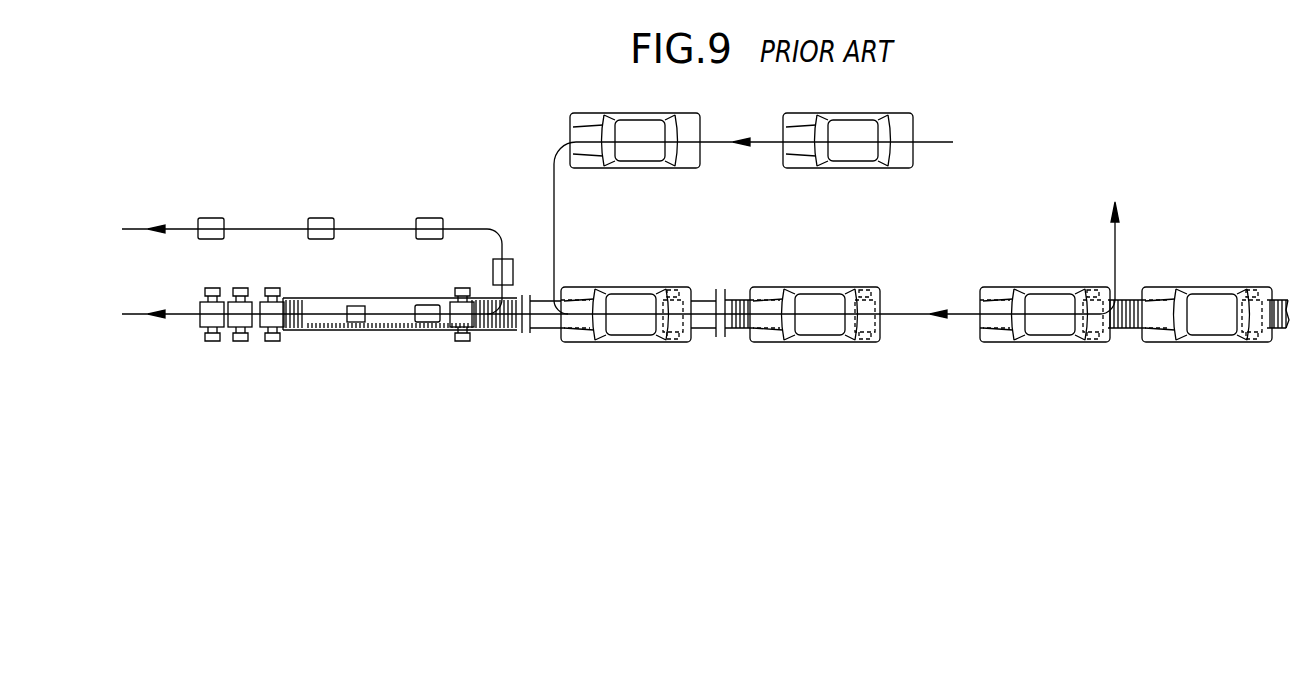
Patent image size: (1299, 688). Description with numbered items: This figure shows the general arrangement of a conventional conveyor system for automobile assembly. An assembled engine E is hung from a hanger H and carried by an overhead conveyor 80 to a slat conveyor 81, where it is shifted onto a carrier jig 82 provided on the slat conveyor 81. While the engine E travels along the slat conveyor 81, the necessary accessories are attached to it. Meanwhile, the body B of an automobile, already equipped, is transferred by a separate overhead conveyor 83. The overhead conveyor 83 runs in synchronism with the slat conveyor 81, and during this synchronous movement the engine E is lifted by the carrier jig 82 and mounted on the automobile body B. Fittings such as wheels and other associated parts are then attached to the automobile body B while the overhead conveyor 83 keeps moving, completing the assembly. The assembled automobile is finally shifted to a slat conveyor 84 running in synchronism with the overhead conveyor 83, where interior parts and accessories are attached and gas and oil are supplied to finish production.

The overhead conveyor 80 is at (395, 316).
The slat conveyor 81 is at (342, 330).
The carrier jig 82 is at (356, 305).
The overhead conveyor 83 is at (556, 228).
The slat conveyor 84 is at (1130, 331).
The automobile body B is at (848, 115).
The engine E is at (264, 300).
The hanger H is at (317, 218).